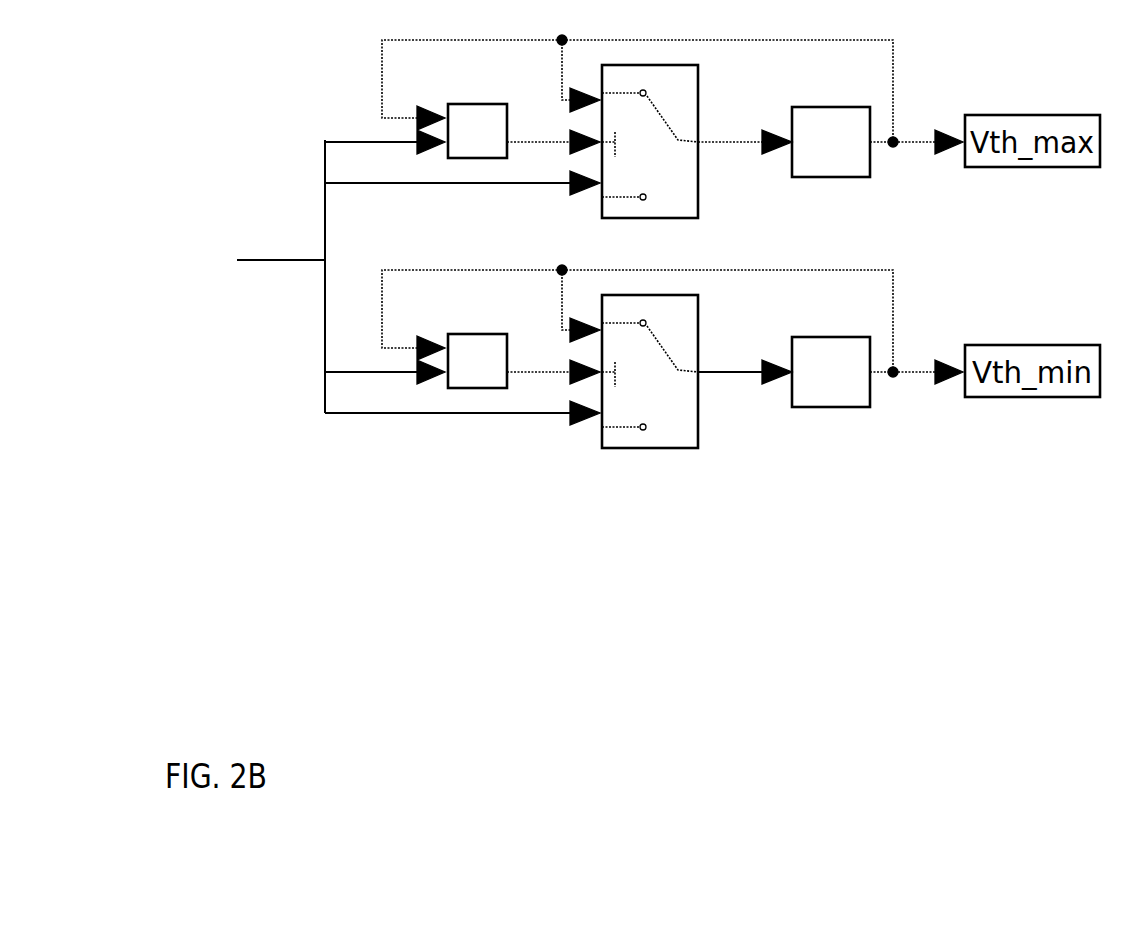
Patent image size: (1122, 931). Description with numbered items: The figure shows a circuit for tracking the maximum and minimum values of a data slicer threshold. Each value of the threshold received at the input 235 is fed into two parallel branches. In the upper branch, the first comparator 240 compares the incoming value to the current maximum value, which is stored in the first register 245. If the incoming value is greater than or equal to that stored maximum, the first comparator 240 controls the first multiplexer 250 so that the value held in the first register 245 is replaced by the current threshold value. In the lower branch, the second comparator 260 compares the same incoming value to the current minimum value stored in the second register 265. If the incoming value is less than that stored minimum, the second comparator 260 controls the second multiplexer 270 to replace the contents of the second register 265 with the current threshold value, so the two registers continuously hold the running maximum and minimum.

The input 235 is at (250, 262).
The first comparator 240 is at (483, 104).
The first multiplexer 250 is at (699, 91).
The first register 245 is at (817, 107).
The second comparator 260 is at (483, 334).
The second multiplexer 270 is at (699, 321).
The second register 265 is at (817, 337).